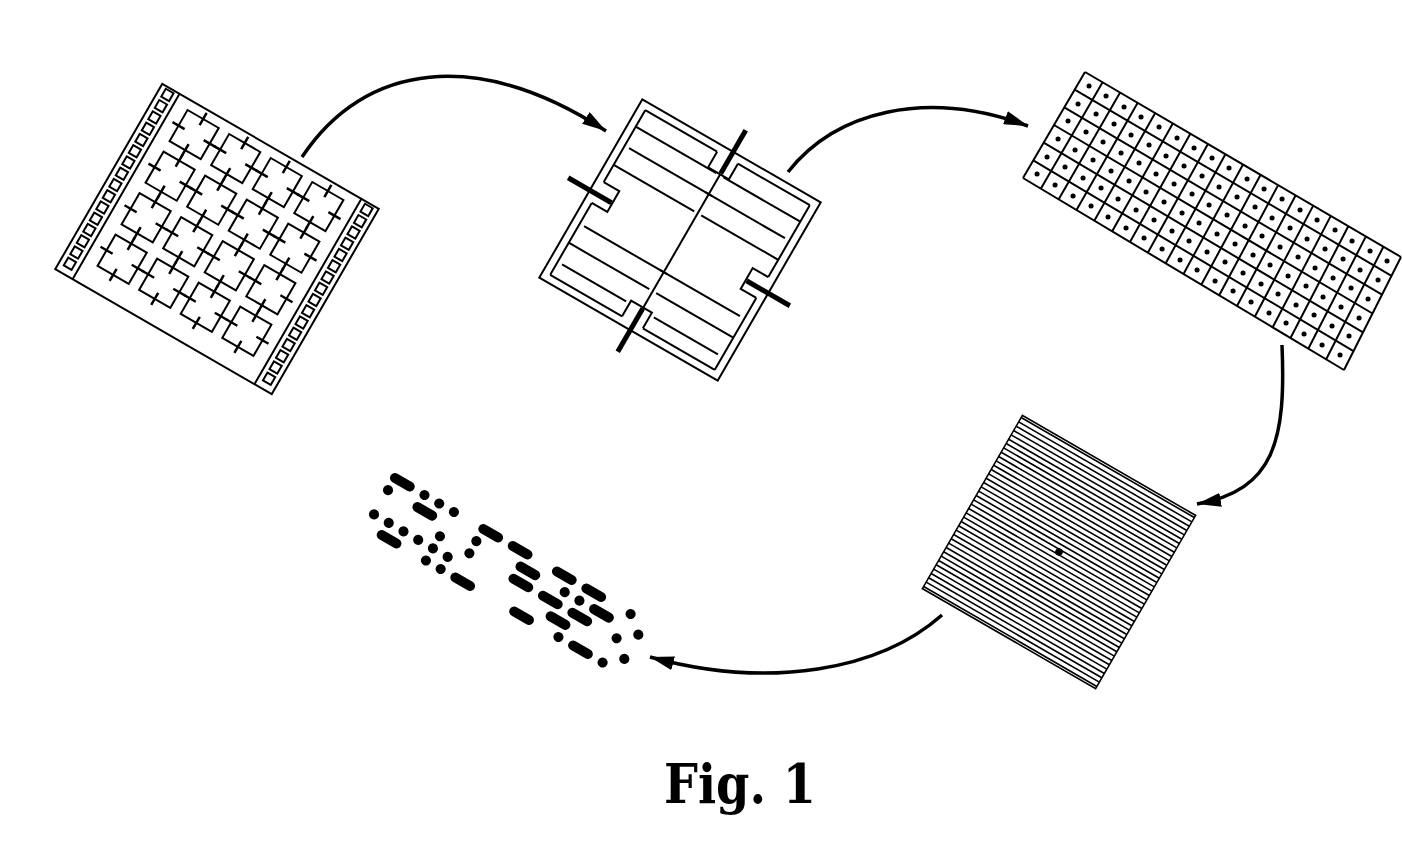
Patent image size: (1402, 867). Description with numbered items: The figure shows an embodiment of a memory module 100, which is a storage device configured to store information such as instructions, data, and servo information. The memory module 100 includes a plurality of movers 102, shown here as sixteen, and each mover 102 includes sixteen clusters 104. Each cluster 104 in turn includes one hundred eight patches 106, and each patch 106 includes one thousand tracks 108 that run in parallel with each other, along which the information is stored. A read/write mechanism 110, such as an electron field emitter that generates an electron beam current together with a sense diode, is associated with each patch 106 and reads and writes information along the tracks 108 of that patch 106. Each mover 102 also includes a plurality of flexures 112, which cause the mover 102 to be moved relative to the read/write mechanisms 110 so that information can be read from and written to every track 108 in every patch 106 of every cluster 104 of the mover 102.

The memory module 100 is at (224, 369).
The mover 102 is at (528, 288).
The cluster 104 is at (1033, 196).
The patch 106 is at (1340, 355).
The track 108 is at (652, 604).
The read/write mechanism 110 is at (1161, 126).
The flexure 112 is at (582, 166).